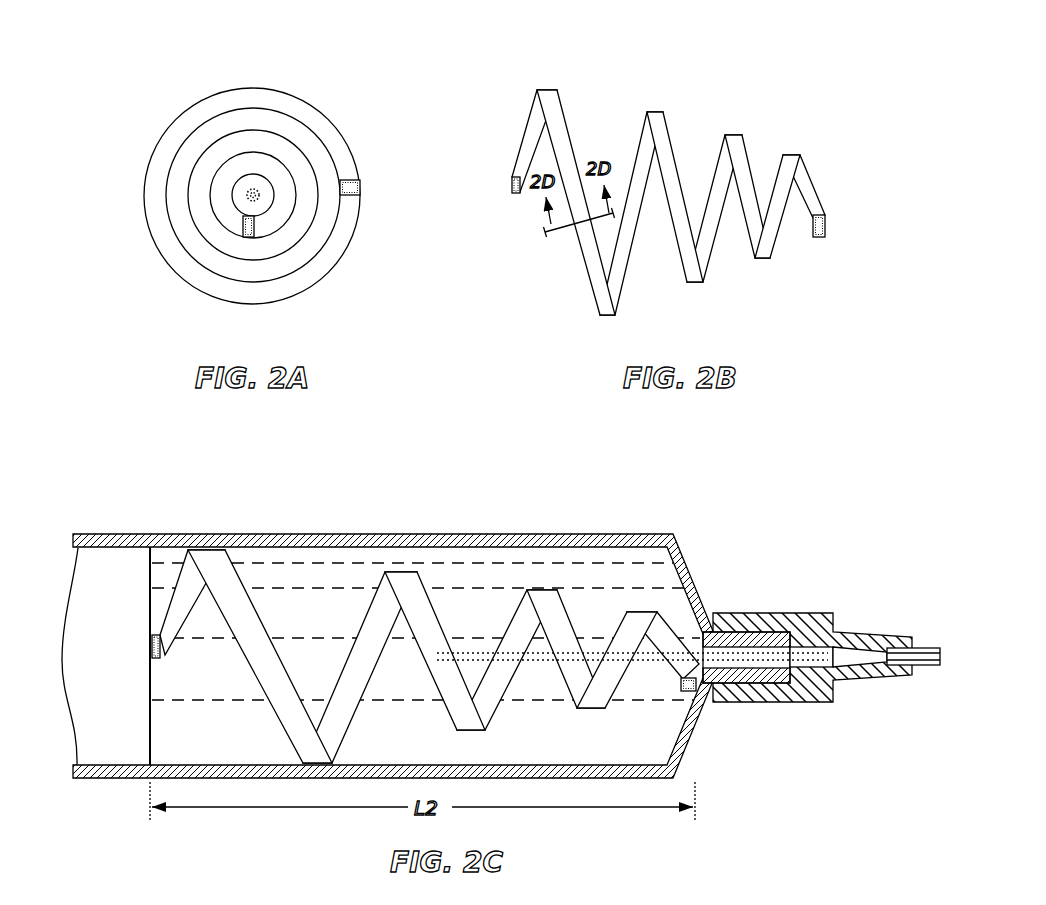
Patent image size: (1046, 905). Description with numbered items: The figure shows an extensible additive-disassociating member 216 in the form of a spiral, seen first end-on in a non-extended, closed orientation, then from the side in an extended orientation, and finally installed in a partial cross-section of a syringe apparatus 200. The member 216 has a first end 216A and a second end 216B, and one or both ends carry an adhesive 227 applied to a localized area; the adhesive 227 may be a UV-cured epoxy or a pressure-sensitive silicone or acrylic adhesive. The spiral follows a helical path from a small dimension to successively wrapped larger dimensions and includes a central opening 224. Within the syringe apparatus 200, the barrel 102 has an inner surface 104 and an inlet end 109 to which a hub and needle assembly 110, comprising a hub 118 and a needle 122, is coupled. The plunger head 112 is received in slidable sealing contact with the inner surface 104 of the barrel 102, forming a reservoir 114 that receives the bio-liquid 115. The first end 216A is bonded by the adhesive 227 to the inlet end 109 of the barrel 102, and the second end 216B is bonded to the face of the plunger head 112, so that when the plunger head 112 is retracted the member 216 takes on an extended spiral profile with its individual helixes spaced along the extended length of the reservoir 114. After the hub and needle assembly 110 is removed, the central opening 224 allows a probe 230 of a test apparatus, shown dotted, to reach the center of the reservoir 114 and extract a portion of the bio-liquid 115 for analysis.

In FIG. 2A, the extensible additive-disassociating member 216 is at (264, 84).
In FIG. 2B, the extensible additive-disassociating member 216 is at (548, 86).
In FIG. 2C, the extensible additive-disassociating member 216 is at (452, 711).
In FIG. 2A, the first end 216A is at (258, 227).
In FIG. 2B, the first end 216A is at (827, 240).
In FIG. 2C, the first end 216A is at (683, 691).
In FIG. 2A, the second end 216B is at (364, 188).
In FIG. 2B, the second end 216B is at (510, 183).
In FIG. 2C, the second end 216B is at (167, 660).
In FIG. 2A, the central opening 224 is at (239, 181).
In FIG. 2C, the central opening 224 is at (676, 624).
In FIG. 2A, the adhesive 227 is at (352, 181).
In FIG. 2B, the adhesive 227 is at (511, 191).
In FIG. 2C, the adhesive 227 is at (150, 642).
In FIG. 2A, the probe 230 is at (247, 200).
In FIG. 2C, the probe 230 is at (806, 662).
In FIG. 2C, the syringe apparatus 200 is at (500, 616).
In FIG. 2C, the barrel 102 is at (387, 623).
In FIG. 2C, the inner surface 104 is at (338, 548).
In FIG. 2C, the inlet end 109 is at (808, 664).
In FIG. 2C, the hub and needle assembly 110 is at (851, 610).
In FIG. 2C, the plunger head 112 is at (128, 667).
In FIG. 2C, the reservoir 114 is at (540, 553).
In FIG. 2C, the bio-liquid 115 is at (600, 557).
In FIG. 2C, the hub 118 is at (773, 612).
In FIG. 2C, the needle 122 is at (933, 647).